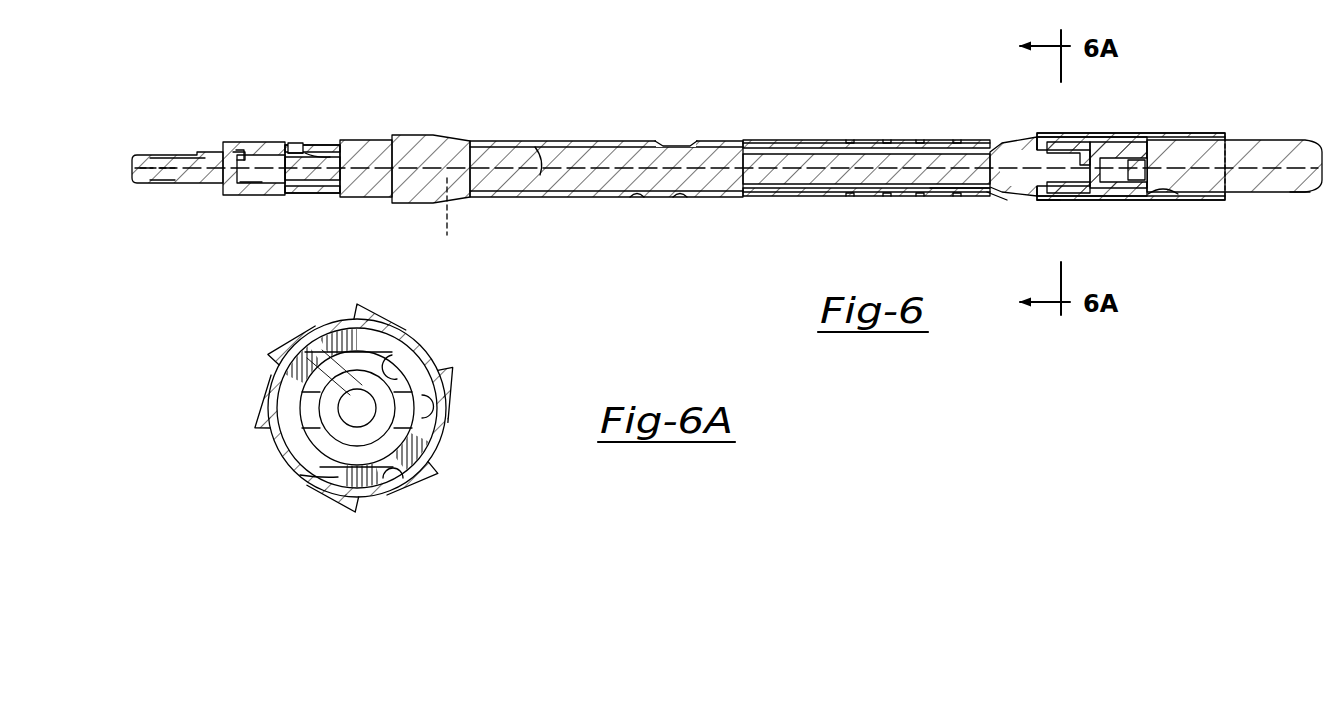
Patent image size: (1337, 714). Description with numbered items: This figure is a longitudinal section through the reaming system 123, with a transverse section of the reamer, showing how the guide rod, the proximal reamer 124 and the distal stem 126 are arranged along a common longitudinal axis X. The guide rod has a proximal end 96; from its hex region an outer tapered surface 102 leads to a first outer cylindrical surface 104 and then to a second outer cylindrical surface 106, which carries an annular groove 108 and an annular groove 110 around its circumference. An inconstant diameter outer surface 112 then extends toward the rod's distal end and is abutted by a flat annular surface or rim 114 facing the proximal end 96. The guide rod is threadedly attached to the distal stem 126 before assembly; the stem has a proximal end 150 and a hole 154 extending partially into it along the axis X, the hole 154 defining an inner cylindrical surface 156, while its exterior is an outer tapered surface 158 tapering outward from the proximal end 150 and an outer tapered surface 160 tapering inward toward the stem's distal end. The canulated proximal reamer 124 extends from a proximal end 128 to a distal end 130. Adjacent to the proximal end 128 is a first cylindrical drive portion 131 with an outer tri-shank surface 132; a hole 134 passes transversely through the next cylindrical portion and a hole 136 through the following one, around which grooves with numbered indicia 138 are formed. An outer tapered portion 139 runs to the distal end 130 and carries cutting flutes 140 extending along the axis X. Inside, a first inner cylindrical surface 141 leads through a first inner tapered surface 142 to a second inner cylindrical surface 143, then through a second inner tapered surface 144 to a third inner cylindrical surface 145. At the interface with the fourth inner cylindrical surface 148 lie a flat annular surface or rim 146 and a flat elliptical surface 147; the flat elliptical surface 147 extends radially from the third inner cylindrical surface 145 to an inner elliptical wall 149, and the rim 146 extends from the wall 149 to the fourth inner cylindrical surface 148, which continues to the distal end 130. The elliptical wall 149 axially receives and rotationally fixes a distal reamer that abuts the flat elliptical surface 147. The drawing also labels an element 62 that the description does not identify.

In FIG. 6, the outer tube 62 is at (740, 141).
In FIG. 6, the proximal end 96 is at (258, 183).
In FIG. 6, the outer tapered surface 102 is at (303, 186).
In FIG. 6, the first outer cylindrical surface 104 is at (325, 190).
In FIG. 6, the second outer cylindrical surface 106 is at (505, 197).
In FIG. 6, the annular groove 108 is at (637, 195).
In FIG. 6, the annular groove 110 is at (680, 146).
In FIG. 6, the inconstant diameter outer surface 112 is at (942, 187).
In FIG. 6, the flat annular surface or rim 114 is at (1030, 140).
In FIG. 6, the reaming system 123 is at (528, 97).
In FIG. 6, the proximal reamer 124 is at (776, 140).
In FIG. 6A, the proximal reamer 124 is at (262, 402).
In FIG. 6, the distal stem 126 is at (1258, 140).
In FIG. 6, the proximal end 128 is at (142, 155).
In FIG. 6, the distal end 130 is at (1222, 133).
In FIG. 6, the first cylindrical drive portion 131 is at (160, 155).
In FIG. 6, the outer tri-shank surface 132 is at (152, 184).
In FIG. 6, the hole 134 is at (298, 150).
In FIG. 6, the hole 136 is at (680, 197).
In FIG. 6, the numbered indicia 138 is at (957, 140).
In FIG. 6, the outer tapered portion 139 is at (998, 202).
In FIG. 6, the cutting flutes 140 is at (1040, 203).
In FIG. 6A, the cutting flutes 140 is at (442, 468).
In FIG. 6, the first inner cylindrical surface 141 is at (175, 178).
In FIG. 6, the first inner tapered surface 142 is at (244, 160).
In FIG. 6, the second inner cylindrical surface 143 is at (252, 183).
In FIG. 6, the second inner tapered surface 144 is at (318, 152).
In FIG. 6, the third inner cylindrical surface 145 is at (540, 149).
In FIG. 6A, the third inner cylindrical surface 145 is at (398, 366).
In FIG. 6, the flat annular surface or rim 146 is at (1052, 194).
In FIG. 6A, the flat annular surface or rim 146 is at (302, 475).
In FIG. 6A, the flat elliptical surface 147 is at (317, 352).
In FIG. 6, the fourth inner cylindrical surface 148 is at (1165, 192).
In FIG. 6A, the fourth inner cylindrical surface 148 is at (394, 478).
In FIG. 6A, the inner elliptical wall 149 is at (428, 406).
In FIG. 6, the proximal end 150 is at (1070, 150).
In FIG. 6, the hole 154 is at (1085, 166).
In FIG. 6, the inner cylindrical surface 156 is at (1138, 178).
In FIG. 6, the outer tapered surface 158 is at (1125, 142).
In FIG. 6, the outer tapered surface 160 is at (1302, 196).
In FIG. 6, the longitudinal axis X is at (447, 218).